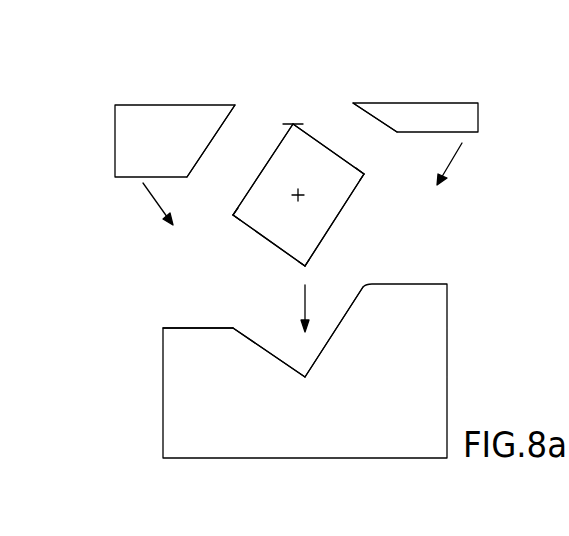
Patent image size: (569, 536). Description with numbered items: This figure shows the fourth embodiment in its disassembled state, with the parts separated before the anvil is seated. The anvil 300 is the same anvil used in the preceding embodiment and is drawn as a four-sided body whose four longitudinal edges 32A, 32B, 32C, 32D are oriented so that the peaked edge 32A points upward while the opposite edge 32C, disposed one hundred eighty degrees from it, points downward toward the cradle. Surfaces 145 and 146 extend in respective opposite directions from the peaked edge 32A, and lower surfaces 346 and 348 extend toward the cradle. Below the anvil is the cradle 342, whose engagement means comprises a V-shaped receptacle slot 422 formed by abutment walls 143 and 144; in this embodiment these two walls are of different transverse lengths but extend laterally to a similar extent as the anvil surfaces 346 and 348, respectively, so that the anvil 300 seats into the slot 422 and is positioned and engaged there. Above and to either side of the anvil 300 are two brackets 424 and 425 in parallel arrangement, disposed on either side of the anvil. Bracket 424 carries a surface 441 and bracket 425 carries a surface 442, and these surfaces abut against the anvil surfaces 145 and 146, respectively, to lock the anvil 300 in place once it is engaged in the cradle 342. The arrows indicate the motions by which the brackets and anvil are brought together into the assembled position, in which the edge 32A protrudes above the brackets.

The anvil 300 is at (327, 200).
The peaked edge 32A is at (293, 124).
The edge of anvil 32B is at (364, 174).
The edge of anvil 32C is at (305, 266).
The edge of anvil 32D is at (233, 215).
The anvil surface 145 is at (331, 149).
The anvil surface 146 is at (263, 168).
The anvil surface 346 is at (268, 242).
The anvil surface 348 is at (328, 232).
The bracket 424 is at (431, 104).
The bracket 425 is at (180, 105).
The bracket surface 441 is at (377, 120).
The bracket surface 442 is at (213, 142).
The cradle 342 is at (163, 407).
The V-shaped receptacle slot 422 is at (260, 337).
The abutment wall 143 is at (268, 355).
The abutment wall 144 is at (336, 332).